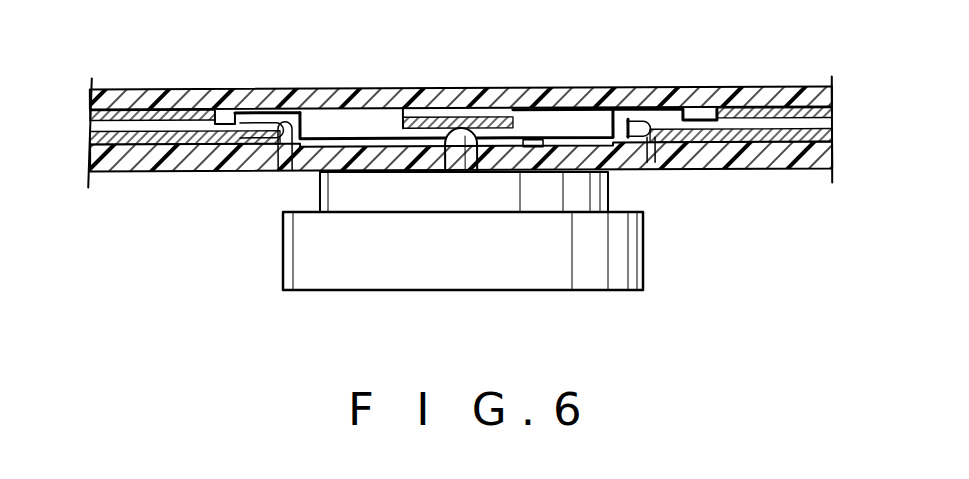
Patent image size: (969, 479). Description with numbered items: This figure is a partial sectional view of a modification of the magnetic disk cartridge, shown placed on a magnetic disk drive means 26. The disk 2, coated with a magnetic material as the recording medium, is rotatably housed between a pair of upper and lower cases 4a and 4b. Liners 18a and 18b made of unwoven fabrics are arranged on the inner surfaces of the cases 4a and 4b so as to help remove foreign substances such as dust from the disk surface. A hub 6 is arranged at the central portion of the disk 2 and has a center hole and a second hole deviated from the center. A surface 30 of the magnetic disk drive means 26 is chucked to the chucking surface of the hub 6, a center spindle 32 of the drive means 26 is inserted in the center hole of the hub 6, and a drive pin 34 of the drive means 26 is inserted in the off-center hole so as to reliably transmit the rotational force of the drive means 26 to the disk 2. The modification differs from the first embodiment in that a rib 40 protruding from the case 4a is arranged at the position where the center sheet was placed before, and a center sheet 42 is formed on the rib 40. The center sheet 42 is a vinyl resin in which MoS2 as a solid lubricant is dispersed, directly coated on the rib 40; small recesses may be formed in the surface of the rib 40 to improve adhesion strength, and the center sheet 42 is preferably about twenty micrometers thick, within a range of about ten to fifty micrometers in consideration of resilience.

The disk 2 is at (834, 130).
The upper case 4a is at (669, 90).
The lower case 4b is at (703, 158).
The hub 6 is at (641, 155).
The liner 18a is at (770, 92).
The liner 18b is at (778, 166).
The magnetic disk drive means 26 is at (363, 263).
The surface 30 is at (333, 176).
The center spindle 32 is at (463, 160).
The drive pin 34 is at (538, 147).
The rib 40 is at (420, 90).
The center sheet 42 is at (535, 90).